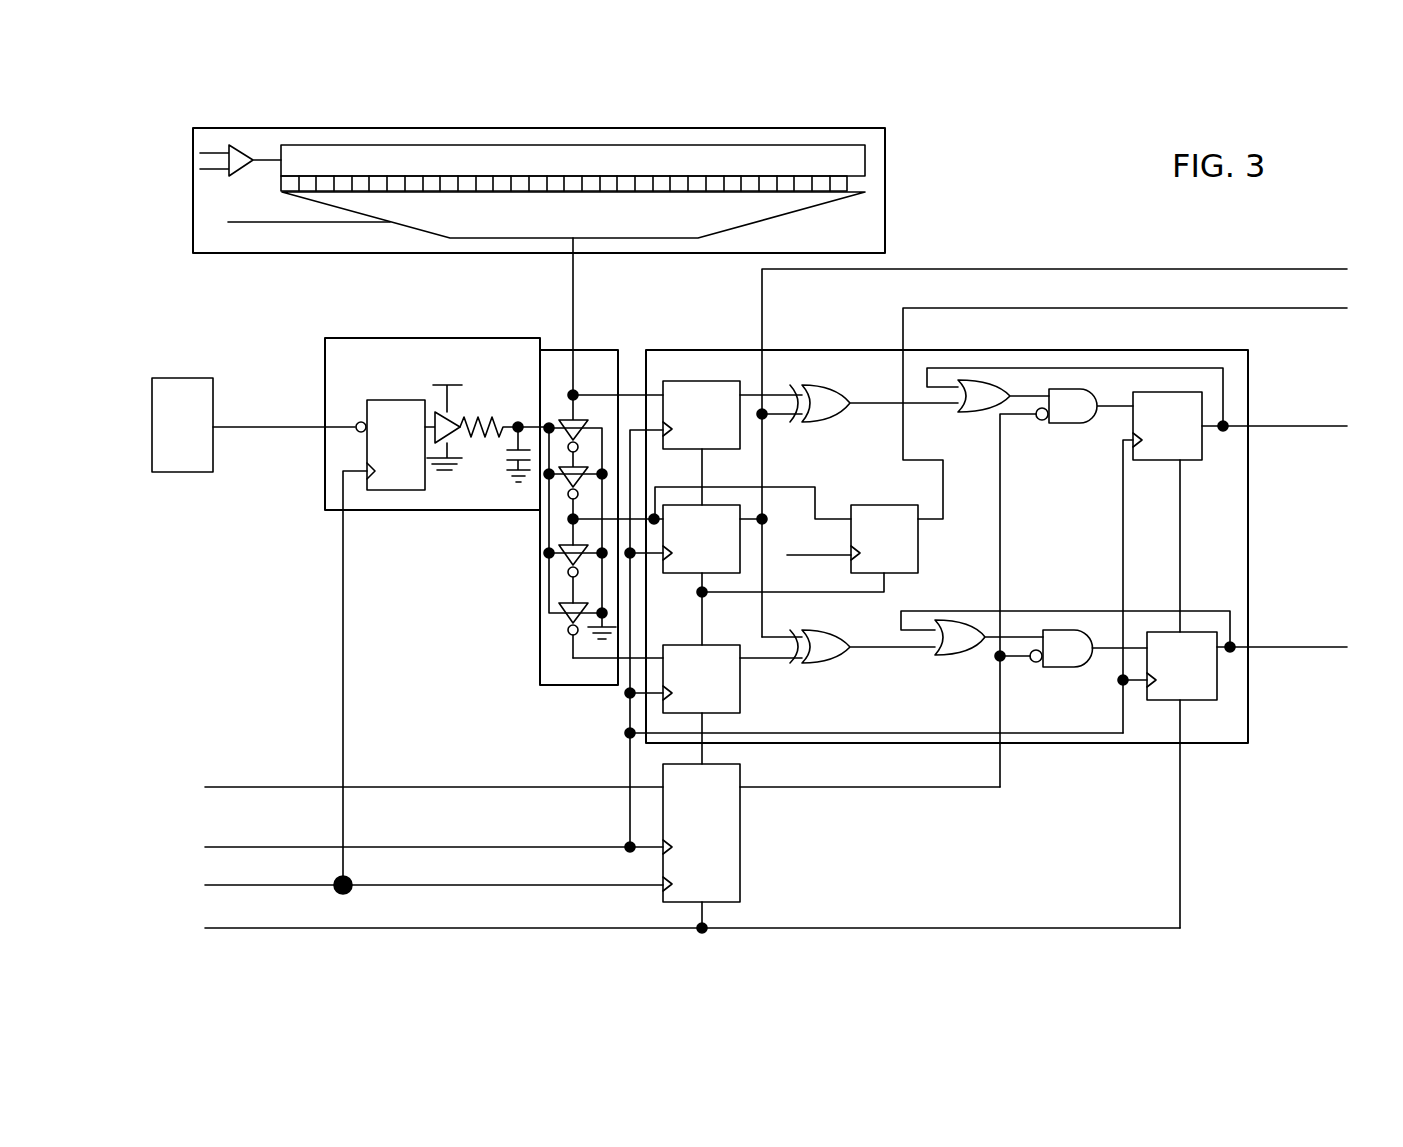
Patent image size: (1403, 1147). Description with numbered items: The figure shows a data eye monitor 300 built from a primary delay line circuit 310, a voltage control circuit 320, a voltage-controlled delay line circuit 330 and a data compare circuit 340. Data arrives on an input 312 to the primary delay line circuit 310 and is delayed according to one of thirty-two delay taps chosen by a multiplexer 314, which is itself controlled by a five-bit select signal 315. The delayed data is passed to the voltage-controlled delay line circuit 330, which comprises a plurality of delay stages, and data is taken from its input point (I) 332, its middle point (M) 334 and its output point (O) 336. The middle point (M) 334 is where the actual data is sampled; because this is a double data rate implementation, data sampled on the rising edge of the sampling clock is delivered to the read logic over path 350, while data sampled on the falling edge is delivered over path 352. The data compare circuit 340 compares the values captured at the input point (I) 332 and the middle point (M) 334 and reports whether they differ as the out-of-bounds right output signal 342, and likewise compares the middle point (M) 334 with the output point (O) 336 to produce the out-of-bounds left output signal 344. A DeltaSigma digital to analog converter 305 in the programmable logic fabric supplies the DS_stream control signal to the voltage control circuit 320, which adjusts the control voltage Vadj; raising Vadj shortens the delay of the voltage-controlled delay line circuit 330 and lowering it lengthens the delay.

The data eye monitor 300 is at (1229, 130).
The digital to analog converter (DAC) 305 is at (178, 474).
The primary delay line circuit 310 is at (887, 161).
The input 312 is at (258, 160).
The multiplexer 314 is at (803, 208).
The select signal 315 is at (332, 223).
The voltage control circuit 320 is at (435, 338).
The voltage-controlled delay line circuit 330 is at (574, 355).
The input point (I) 332 is at (574, 392).
The middle point (M) 334 is at (570, 519).
The output point (O) 336 is at (573, 656).
The data compare circuit 340 is at (813, 350).
The output signal (OOBR) 342 is at (1262, 426).
The output signal (OOBL) 344 is at (1262, 647).
The path for rising edge sampled data 350 is at (982, 268).
The path for falling edge sampled data 352 is at (950, 308).